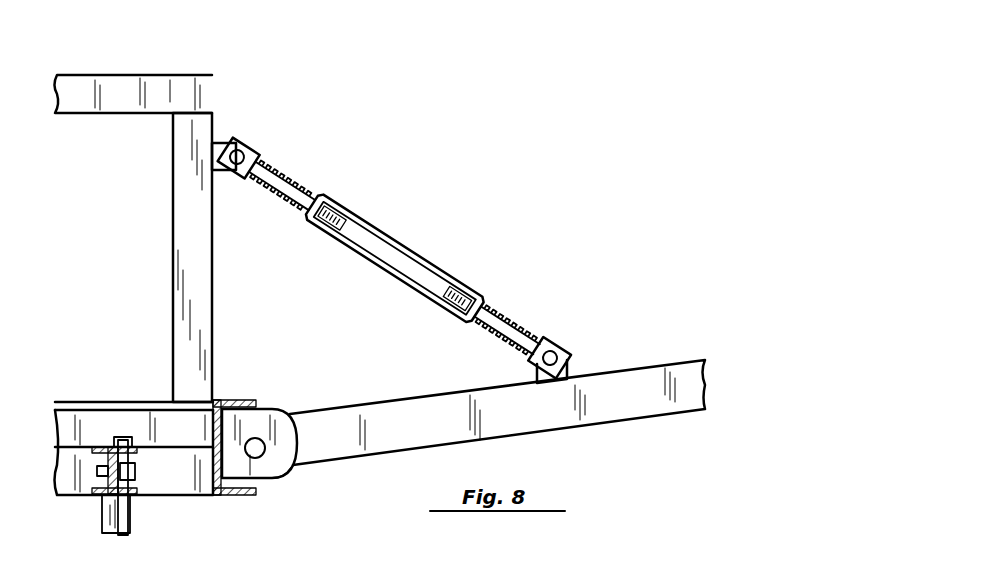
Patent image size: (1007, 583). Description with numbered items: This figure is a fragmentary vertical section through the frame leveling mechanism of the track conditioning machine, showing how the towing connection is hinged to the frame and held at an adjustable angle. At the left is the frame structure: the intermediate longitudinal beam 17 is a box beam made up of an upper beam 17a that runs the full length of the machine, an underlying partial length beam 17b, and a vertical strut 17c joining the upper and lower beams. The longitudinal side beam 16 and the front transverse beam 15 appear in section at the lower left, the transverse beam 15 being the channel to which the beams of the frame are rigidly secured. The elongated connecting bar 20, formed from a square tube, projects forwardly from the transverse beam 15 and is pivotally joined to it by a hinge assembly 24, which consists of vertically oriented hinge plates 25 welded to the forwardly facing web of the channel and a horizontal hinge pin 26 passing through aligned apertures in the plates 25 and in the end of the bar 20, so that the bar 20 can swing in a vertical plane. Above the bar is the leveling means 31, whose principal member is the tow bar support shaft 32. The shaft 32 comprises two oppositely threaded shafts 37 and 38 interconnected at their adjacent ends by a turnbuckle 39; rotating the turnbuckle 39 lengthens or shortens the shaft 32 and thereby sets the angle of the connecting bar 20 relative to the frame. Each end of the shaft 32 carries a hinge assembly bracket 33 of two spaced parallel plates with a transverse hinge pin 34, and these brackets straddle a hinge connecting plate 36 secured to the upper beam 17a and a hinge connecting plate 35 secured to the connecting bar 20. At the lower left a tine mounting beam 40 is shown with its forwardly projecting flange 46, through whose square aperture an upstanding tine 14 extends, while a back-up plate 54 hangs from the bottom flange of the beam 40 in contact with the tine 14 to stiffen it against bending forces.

The tine 14 is at (135, 480).
The front transverse beam 15 is at (240, 402).
The longitudinal side beam 16 is at (97, 402).
The intermediate longitudinal beam 17 is at (135, 210).
The upper beam 17a is at (128, 83).
The partial length beam 17b is at (160, 402).
The vertical strut 17c is at (178, 245).
The connecting bar 20 is at (418, 400).
The hinge assembly 24 is at (278, 480).
The hinge plate 25 is at (262, 418).
The hinge pin 26 is at (265, 448).
The leveling means 31 is at (424, 198).
The tow bar support shaft 32 is at (413, 215).
The hinge assembly bracket 33 is at (410, 234).
The hinge pin 34 is at (385, 272).
The hinge connecting plate 35 is at (575, 366).
The hinge connecting plate 36 is at (222, 143).
The threaded shaft 37 is at (314, 171).
The threaded shaft 38 is at (522, 306).
The turnbuckle 39 is at (414, 229).
The tine mounting beam 40 is at (100, 462).
The flange 46 is at (135, 455).
The back-up plate 54 is at (110, 505).